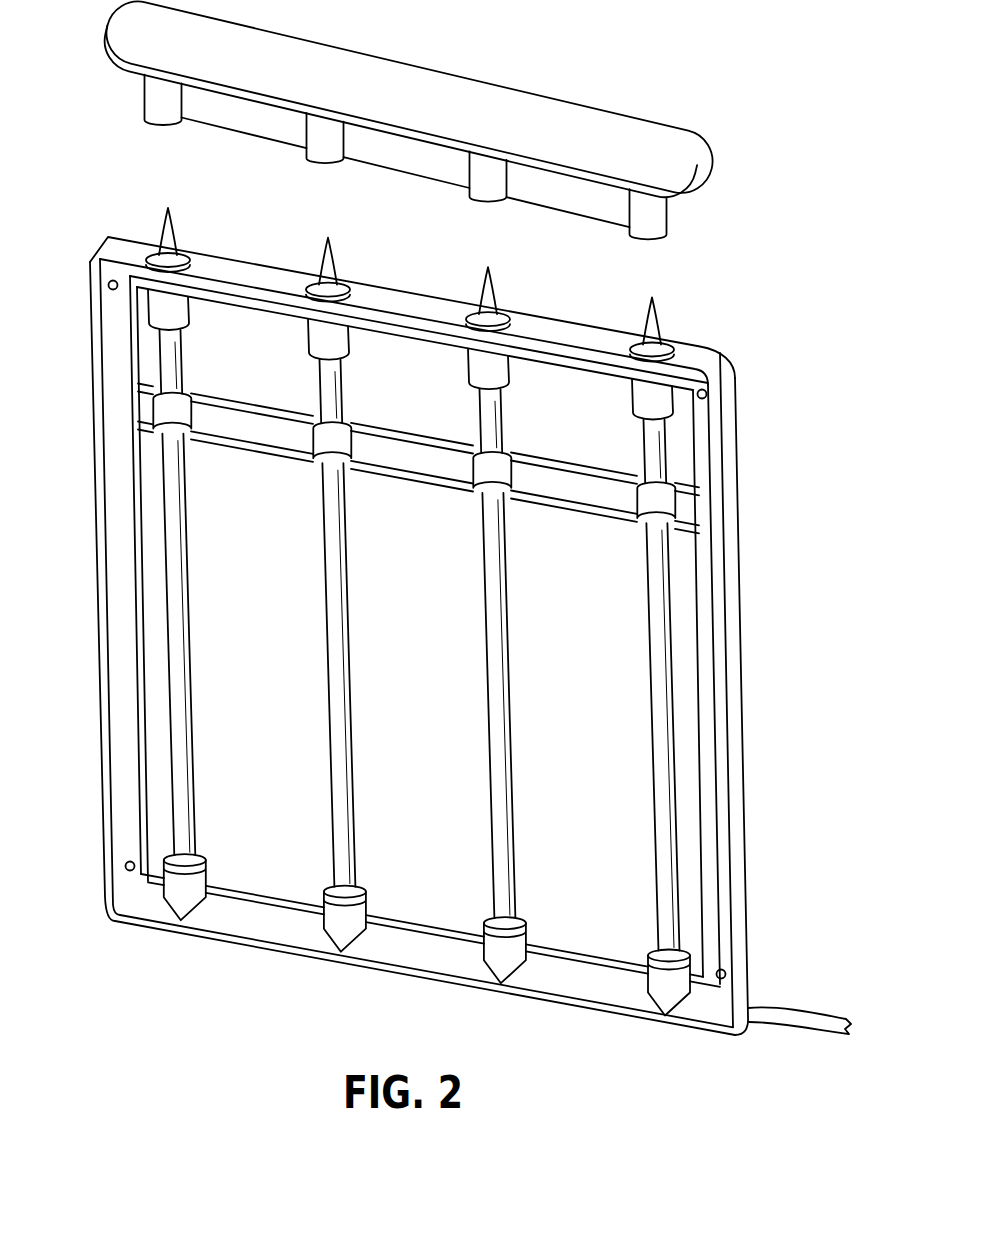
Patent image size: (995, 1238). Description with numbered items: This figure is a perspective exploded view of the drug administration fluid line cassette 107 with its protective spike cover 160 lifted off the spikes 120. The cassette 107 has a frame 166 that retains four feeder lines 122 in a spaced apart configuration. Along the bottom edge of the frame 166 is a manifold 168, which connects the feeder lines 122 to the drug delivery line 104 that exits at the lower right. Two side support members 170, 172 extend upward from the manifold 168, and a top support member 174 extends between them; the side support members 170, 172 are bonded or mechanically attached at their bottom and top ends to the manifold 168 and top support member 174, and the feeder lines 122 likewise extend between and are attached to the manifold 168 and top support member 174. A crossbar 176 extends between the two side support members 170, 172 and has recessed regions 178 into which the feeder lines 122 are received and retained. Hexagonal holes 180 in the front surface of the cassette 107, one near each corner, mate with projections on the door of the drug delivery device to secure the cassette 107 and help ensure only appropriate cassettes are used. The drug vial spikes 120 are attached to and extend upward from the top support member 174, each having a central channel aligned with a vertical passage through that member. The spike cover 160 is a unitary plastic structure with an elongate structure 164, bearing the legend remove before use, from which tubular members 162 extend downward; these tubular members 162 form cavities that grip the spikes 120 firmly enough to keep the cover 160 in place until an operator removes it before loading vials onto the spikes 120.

The drug delivery line 104 is at (801, 1012).
The drug administration fluid line cassette 107 is at (445, 638).
The spikes 120 is at (320, 250).
The feeder lines 122 is at (333, 687).
The spike cover 160 is at (440, 125).
The tubular members 162 is at (660, 223).
The elongate structure 164 is at (606, 118).
The frame 166 is at (437, 638).
The manifold 168 is at (422, 963).
The side support member 170 is at (100, 787).
The side support member 172 is at (738, 888).
The top support member 174 is at (142, 247).
The crossbar 176 is at (682, 507).
The recessed regions 178 is at (493, 460).
The hexagonal holes 180 is at (110, 278).